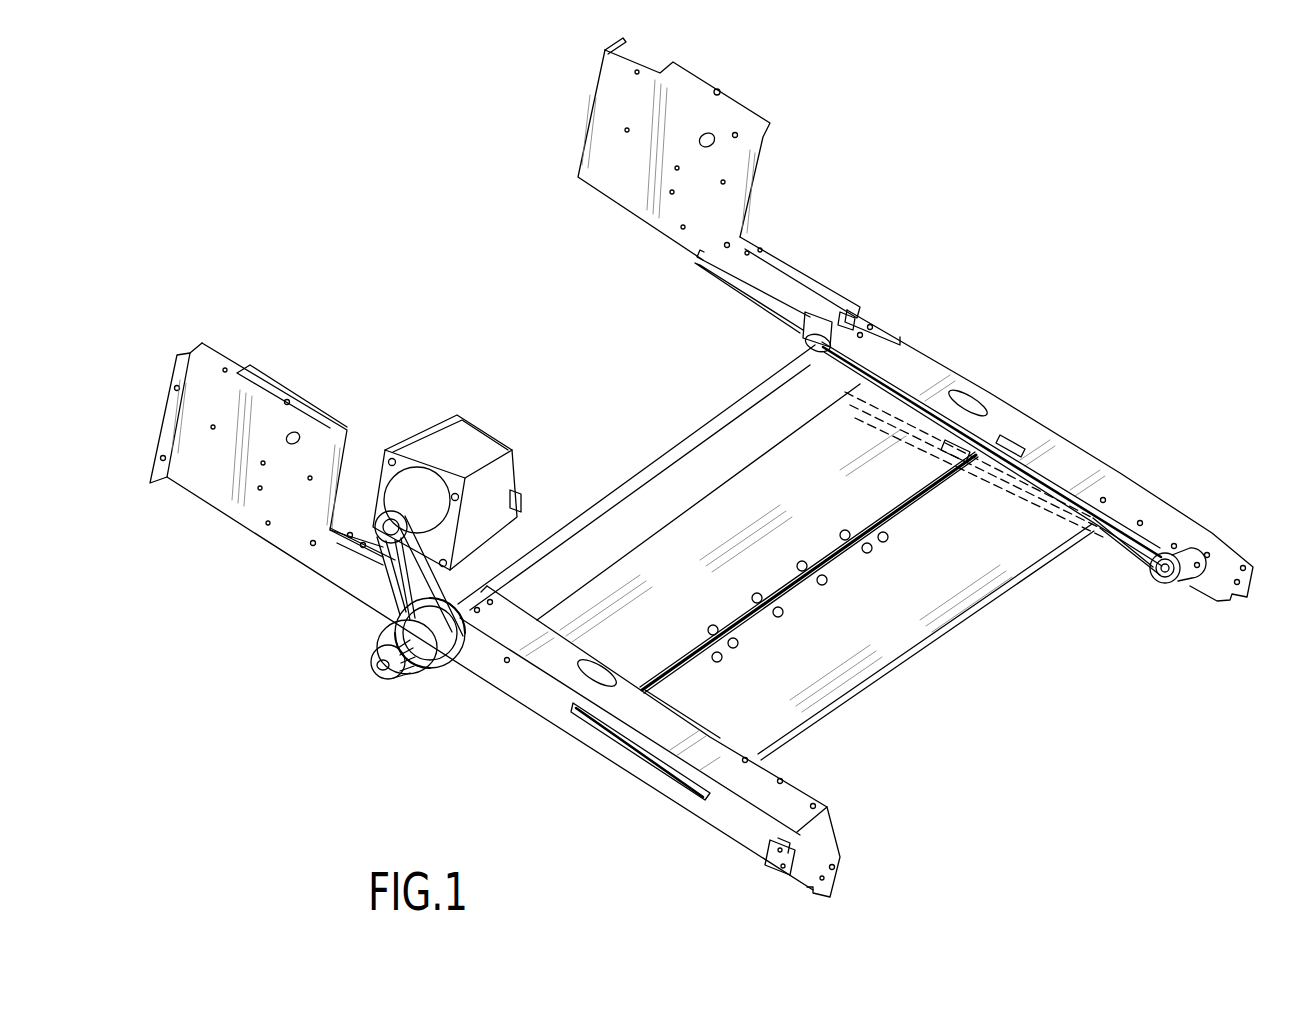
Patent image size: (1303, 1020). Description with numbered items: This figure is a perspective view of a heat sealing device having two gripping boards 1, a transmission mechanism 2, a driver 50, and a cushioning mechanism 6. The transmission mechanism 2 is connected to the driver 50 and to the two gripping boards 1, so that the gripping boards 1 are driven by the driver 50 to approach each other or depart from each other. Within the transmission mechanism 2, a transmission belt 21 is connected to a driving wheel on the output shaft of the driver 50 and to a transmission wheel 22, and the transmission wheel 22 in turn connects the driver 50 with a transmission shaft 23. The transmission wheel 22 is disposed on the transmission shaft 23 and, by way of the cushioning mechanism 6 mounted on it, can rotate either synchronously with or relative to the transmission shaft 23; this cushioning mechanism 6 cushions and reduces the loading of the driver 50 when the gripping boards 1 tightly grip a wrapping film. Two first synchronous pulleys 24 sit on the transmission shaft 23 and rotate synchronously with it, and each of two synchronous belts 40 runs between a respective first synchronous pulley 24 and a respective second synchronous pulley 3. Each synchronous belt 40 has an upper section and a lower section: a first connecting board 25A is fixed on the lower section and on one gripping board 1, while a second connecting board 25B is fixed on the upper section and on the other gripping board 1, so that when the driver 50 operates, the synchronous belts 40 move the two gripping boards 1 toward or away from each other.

The gripping board 1 is at (668, 590).
The transmission mechanism 2 is at (655, 444).
The second synchronous pulley 3 is at (1170, 583).
The cushioning mechanism 6 is at (365, 656).
The transmission belt 21 is at (462, 647).
The transmission wheel 22 is at (410, 603).
The transmission shaft 23 is at (768, 384).
The first synchronous pulley 24 is at (865, 350).
The first connecting board 25A is at (947, 450).
The second connecting board 25B is at (983, 437).
The synchronous belt 40 is at (1130, 560).
The driver 50 is at (440, 445).